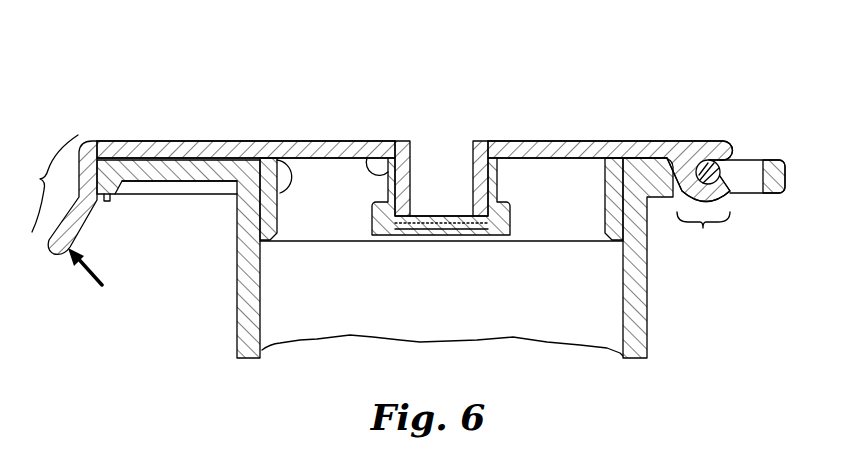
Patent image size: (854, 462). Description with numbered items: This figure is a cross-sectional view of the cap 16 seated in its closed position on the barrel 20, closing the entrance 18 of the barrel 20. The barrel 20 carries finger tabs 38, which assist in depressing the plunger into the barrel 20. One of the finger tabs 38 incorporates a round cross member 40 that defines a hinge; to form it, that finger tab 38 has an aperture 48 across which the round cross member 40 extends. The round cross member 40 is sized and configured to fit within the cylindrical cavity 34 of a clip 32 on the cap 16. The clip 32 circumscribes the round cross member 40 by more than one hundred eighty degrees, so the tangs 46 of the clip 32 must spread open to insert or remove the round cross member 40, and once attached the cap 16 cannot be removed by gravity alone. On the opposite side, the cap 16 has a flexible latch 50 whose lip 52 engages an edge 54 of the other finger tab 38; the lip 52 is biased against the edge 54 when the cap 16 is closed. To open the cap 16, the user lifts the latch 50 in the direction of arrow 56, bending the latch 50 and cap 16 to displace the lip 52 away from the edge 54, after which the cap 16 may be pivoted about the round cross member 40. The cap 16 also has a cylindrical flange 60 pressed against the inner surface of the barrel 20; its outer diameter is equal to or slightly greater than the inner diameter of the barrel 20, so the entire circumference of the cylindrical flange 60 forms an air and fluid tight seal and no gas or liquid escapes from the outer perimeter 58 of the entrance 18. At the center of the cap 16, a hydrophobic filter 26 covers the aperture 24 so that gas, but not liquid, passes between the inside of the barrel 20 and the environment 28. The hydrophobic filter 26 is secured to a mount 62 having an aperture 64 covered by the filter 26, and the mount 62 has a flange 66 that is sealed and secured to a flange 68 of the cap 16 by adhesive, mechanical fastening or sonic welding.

The cap 16 is at (324, 122).
The entrance 18 is at (344, 274).
The barrel 20 is at (634, 307).
The aperture 24 is at (443, 166).
The hydrophobic filter 26 is at (440, 237).
The environment 28 is at (403, 49).
The clip 32 is at (703, 233).
The cylindrical cavity 34 is at (678, 154).
The finger tabs 38 is at (163, 211).
The round cross member 40 is at (722, 168).
The tangs 46 is at (719, 160).
The aperture 48 is at (765, 160).
The latch 50 is at (44, 183).
The lip 52 is at (101, 199).
The edge 54 is at (117, 199).
The arrow 56 is at (90, 263).
The outer perimeter 58 is at (252, 160).
The cylindrical flange 60 is at (280, 162).
The mount 62 is at (514, 217).
The aperture 64 is at (450, 215).
The flange 66 is at (370, 152).
The flange 68 is at (410, 162).